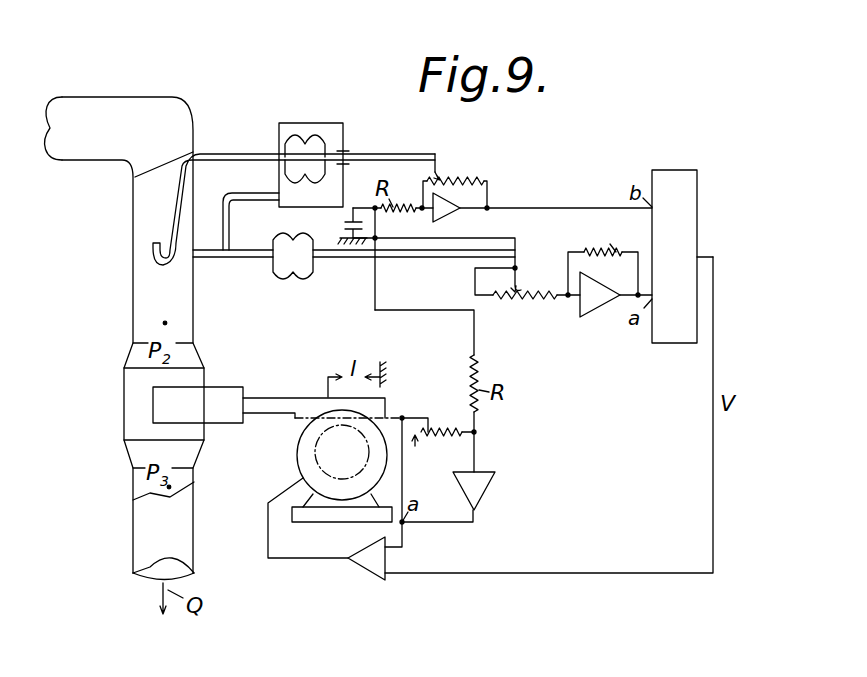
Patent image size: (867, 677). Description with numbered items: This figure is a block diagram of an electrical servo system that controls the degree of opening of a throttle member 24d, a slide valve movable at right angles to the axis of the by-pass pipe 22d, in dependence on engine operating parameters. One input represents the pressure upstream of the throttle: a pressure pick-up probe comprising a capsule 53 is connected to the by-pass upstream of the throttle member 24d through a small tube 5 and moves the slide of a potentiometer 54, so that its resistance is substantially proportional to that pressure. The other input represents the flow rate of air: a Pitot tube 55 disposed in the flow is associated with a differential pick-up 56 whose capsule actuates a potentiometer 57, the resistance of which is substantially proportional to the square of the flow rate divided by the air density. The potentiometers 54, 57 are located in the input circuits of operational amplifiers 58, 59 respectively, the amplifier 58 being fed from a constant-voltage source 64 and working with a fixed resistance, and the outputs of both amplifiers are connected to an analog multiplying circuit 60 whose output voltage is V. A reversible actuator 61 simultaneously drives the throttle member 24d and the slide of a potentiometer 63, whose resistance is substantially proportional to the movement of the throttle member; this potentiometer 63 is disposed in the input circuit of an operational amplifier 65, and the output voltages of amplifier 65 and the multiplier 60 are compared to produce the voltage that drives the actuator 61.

The pipe 22d is at (90, 162).
The Pitot tube 55 is at (153, 257).
The differential pick-up 56 is at (279, 130).
The potentiometer 57 is at (456, 173).
The source 64 is at (345, 222).
The operational amplifier 59 is at (453, 215).
The operational amplifier 58 is at (588, 303).
The potentiometer 54 is at (520, 303).
The analog multiplying circuit 60 is at (685, 215).
The capsule 53 is at (319, 290).
The pressure tube 5 is at (293, 265).
The throttle member 24d is at (222, 398).
The reversible actuator 61 is at (297, 440).
The potentiometer 63 is at (438, 443).
The operational amplifier 65 is at (480, 495).